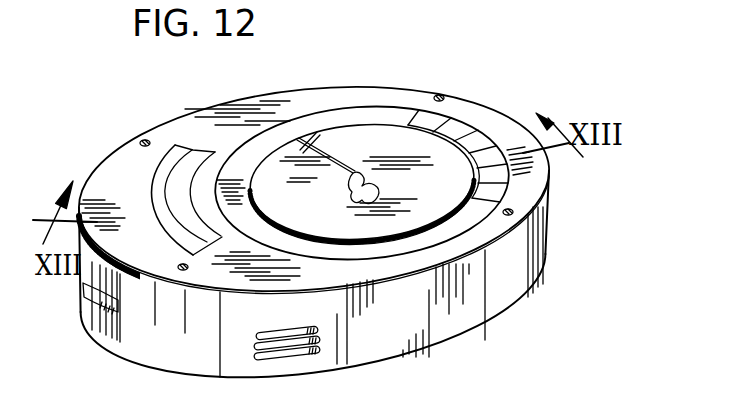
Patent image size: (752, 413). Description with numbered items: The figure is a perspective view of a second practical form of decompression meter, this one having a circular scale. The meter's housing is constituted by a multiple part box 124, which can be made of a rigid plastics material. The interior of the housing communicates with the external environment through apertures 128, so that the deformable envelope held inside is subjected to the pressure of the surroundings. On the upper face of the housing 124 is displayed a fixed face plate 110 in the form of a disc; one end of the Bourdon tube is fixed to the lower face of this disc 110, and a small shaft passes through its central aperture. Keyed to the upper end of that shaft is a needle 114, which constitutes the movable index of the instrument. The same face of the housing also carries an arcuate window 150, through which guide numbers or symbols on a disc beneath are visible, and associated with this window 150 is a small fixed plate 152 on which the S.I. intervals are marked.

The fixed face plate 110 is at (373, 143).
The needle 114 is at (320, 138).
The multiple part box 124 is at (582, 251).
The apertures 128 is at (113, 314).
The arcuate window 150 is at (139, 187).
The small fixed plate 152 is at (223, 155).